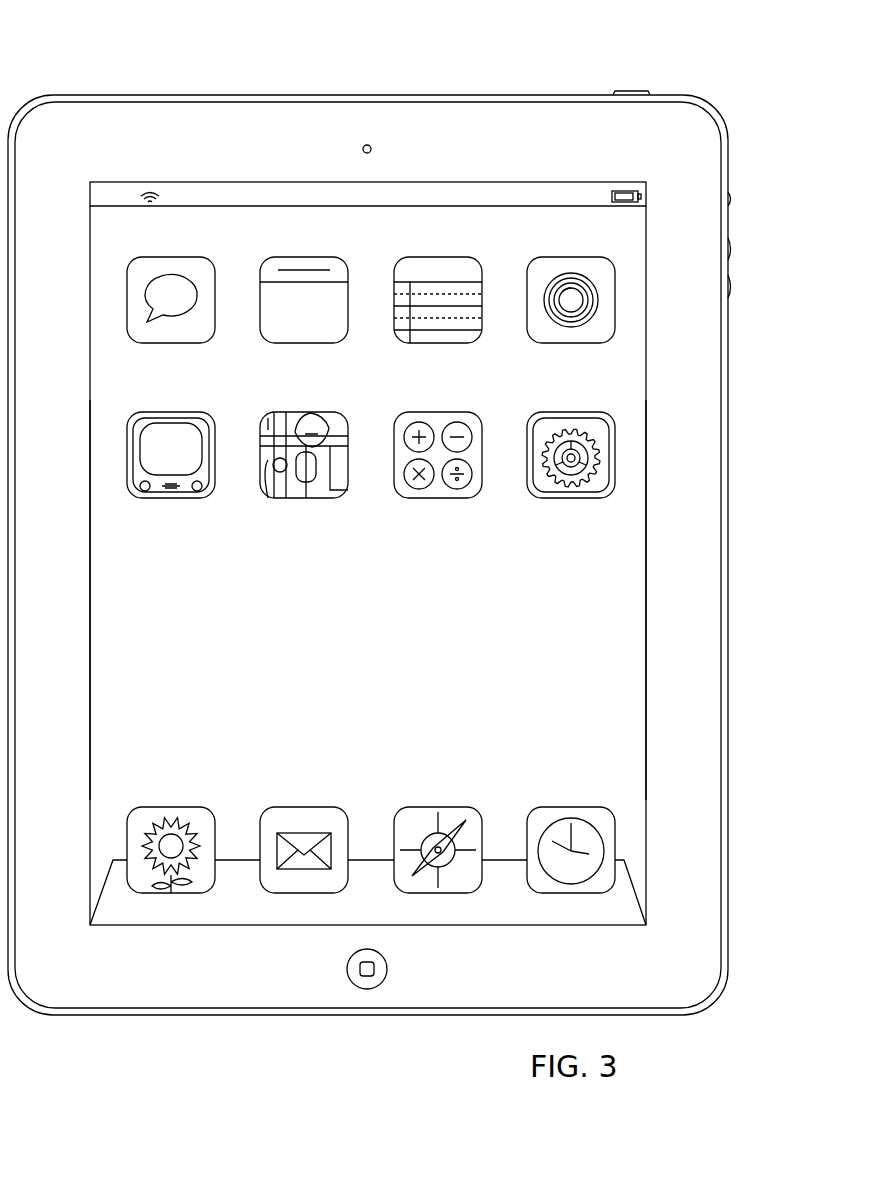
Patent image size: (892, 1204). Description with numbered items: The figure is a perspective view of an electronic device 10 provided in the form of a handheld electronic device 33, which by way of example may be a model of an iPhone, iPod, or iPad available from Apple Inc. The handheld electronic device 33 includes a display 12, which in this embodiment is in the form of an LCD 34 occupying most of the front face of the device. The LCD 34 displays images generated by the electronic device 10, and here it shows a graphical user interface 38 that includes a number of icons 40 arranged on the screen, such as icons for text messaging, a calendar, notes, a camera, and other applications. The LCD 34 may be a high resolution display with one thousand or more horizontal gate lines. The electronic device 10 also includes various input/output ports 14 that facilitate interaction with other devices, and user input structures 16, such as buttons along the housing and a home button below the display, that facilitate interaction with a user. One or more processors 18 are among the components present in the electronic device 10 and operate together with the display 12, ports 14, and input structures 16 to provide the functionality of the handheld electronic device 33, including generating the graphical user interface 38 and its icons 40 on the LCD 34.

The electronic device 10 is at (146, 34).
The display 12 is at (610, 686).
The input/output (I/O) ports 14 is at (105, 96).
The input structures 16 is at (631, 92).
The processors 18 is at (490, 226).
The handheld electronic device 33 is at (400, 83).
The LCD 34 is at (632, 610).
The graphical user interface (GUI) 38 is at (130, 608).
The icons 40 is at (312, 258).